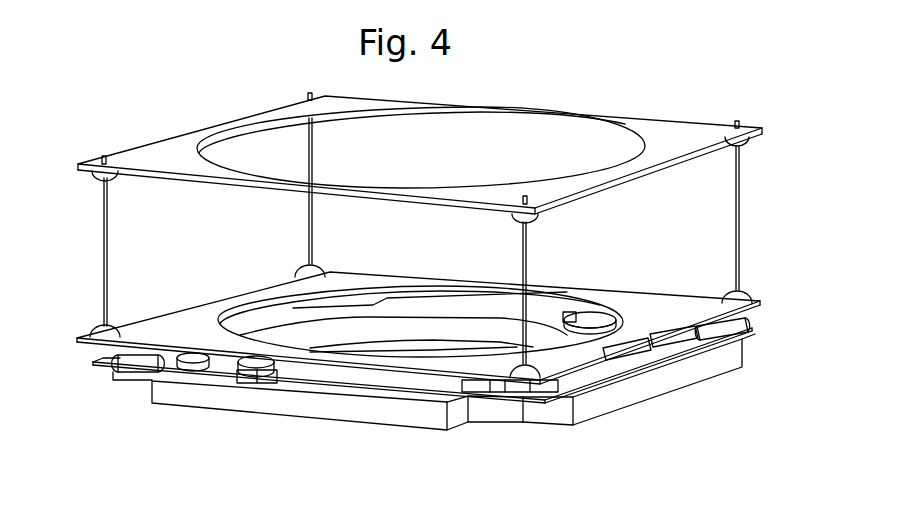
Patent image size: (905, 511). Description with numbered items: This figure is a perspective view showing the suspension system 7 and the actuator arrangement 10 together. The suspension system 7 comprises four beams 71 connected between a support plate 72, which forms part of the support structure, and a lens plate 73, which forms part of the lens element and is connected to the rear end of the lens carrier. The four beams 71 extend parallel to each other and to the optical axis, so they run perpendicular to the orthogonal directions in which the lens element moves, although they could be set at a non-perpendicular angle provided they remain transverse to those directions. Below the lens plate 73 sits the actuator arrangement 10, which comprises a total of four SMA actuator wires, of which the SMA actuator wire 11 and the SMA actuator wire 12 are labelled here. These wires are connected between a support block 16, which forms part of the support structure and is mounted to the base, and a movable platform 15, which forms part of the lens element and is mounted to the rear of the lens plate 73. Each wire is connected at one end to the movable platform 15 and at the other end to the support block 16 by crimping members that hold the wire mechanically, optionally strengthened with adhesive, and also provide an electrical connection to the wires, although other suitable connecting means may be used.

The suspension system 7 is at (745, 210).
The beams 71 is at (103, 250).
The support plate 72 is at (678, 126).
The lens plate 73 is at (633, 298).
The movable platform 15 is at (557, 300).
The actuator arrangement 10 is at (697, 392).
The SMA actuator wire 11 is at (690, 349).
The SMA actuator wire 12 is at (292, 377).
The support block 16 is at (617, 400).